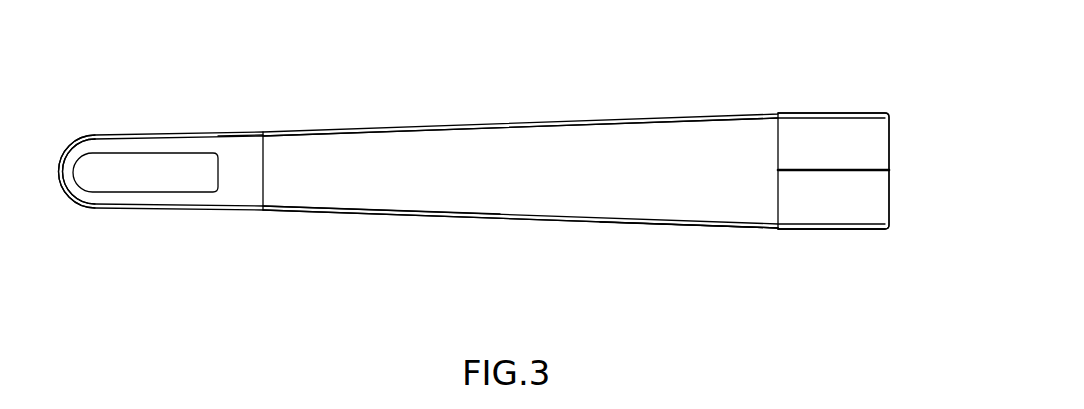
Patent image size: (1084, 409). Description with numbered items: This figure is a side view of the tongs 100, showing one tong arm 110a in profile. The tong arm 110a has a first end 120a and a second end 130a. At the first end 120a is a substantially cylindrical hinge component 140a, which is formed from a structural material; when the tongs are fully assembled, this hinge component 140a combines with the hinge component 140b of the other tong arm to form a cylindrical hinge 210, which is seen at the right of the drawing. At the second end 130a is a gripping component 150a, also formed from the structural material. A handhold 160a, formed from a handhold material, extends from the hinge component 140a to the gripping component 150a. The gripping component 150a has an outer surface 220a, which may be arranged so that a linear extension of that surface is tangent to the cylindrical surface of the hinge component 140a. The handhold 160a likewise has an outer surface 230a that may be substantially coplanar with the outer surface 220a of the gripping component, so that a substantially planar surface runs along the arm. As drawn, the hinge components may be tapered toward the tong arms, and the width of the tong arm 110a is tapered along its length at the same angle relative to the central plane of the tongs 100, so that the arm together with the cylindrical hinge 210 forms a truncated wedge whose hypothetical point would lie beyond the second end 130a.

The tongs 100 is at (733, 73).
The tong arm 110a is at (514, 237).
The first end 120a is at (744, 249).
The second end 130a is at (57, 212).
The hinge component 140a is at (877, 205).
The hinge component 140b is at (875, 135).
The gripping component 150a is at (225, 193).
The handhold 160a is at (400, 203).
The cylindrical hinge 210 is at (871, 172).
The outer surface of gripping component 220a is at (252, 172).
The outer surface of handhold 230a is at (650, 180).